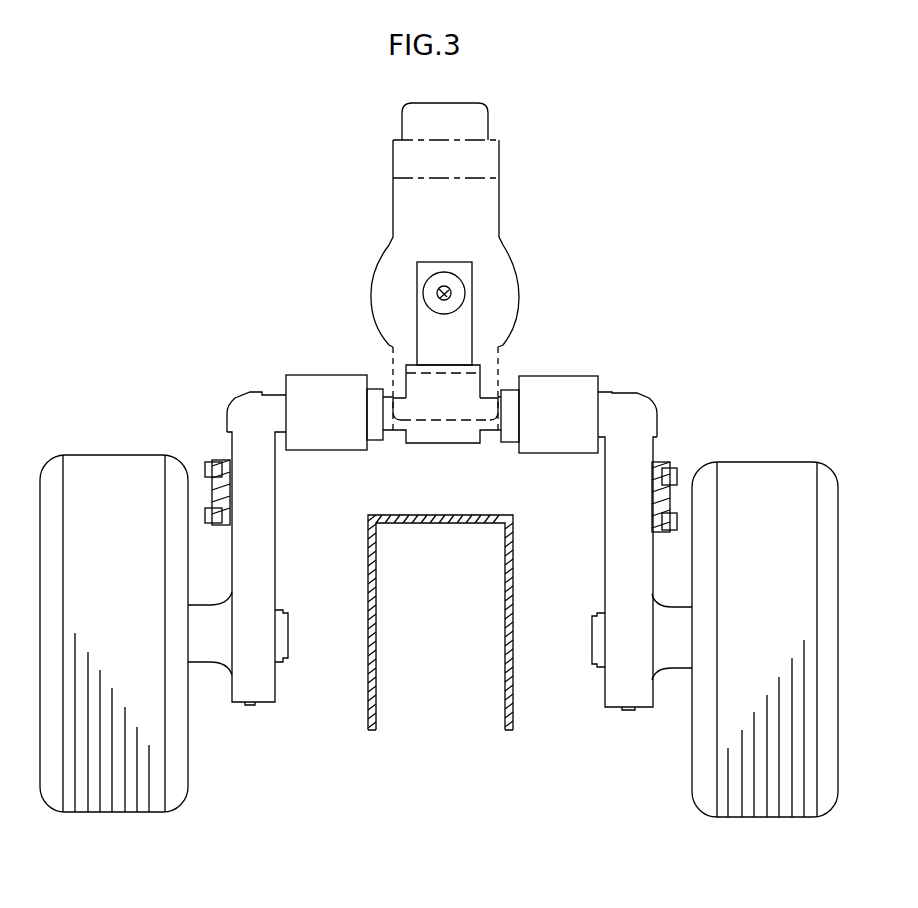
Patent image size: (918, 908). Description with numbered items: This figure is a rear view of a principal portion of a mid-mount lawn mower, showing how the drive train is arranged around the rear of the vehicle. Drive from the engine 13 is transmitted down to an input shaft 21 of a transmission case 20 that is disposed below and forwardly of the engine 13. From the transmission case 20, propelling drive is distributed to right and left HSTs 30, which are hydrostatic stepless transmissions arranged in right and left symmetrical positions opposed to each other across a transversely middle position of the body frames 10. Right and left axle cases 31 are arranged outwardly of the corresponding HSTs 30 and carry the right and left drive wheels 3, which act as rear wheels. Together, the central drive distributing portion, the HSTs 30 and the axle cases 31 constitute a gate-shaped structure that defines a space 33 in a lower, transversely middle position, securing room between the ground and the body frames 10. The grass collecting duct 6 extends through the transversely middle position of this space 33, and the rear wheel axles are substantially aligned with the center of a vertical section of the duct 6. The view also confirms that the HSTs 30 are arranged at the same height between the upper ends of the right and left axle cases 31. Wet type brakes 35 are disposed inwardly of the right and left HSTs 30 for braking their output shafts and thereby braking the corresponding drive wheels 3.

The drive wheels 3 is at (92, 472).
The grass collecting duct 6 is at (370, 693).
The body frames 10 is at (217, 455).
The engine 13 is at (483, 215).
The transmission case 20 is at (445, 433).
The input shaft 21 is at (447, 291).
The HSTs (hydrostatic stepless transmissions) 30 is at (325, 393).
The axle cases 31 is at (263, 518).
The space 33 is at (532, 738).
The wet type brakes 35 is at (367, 452).